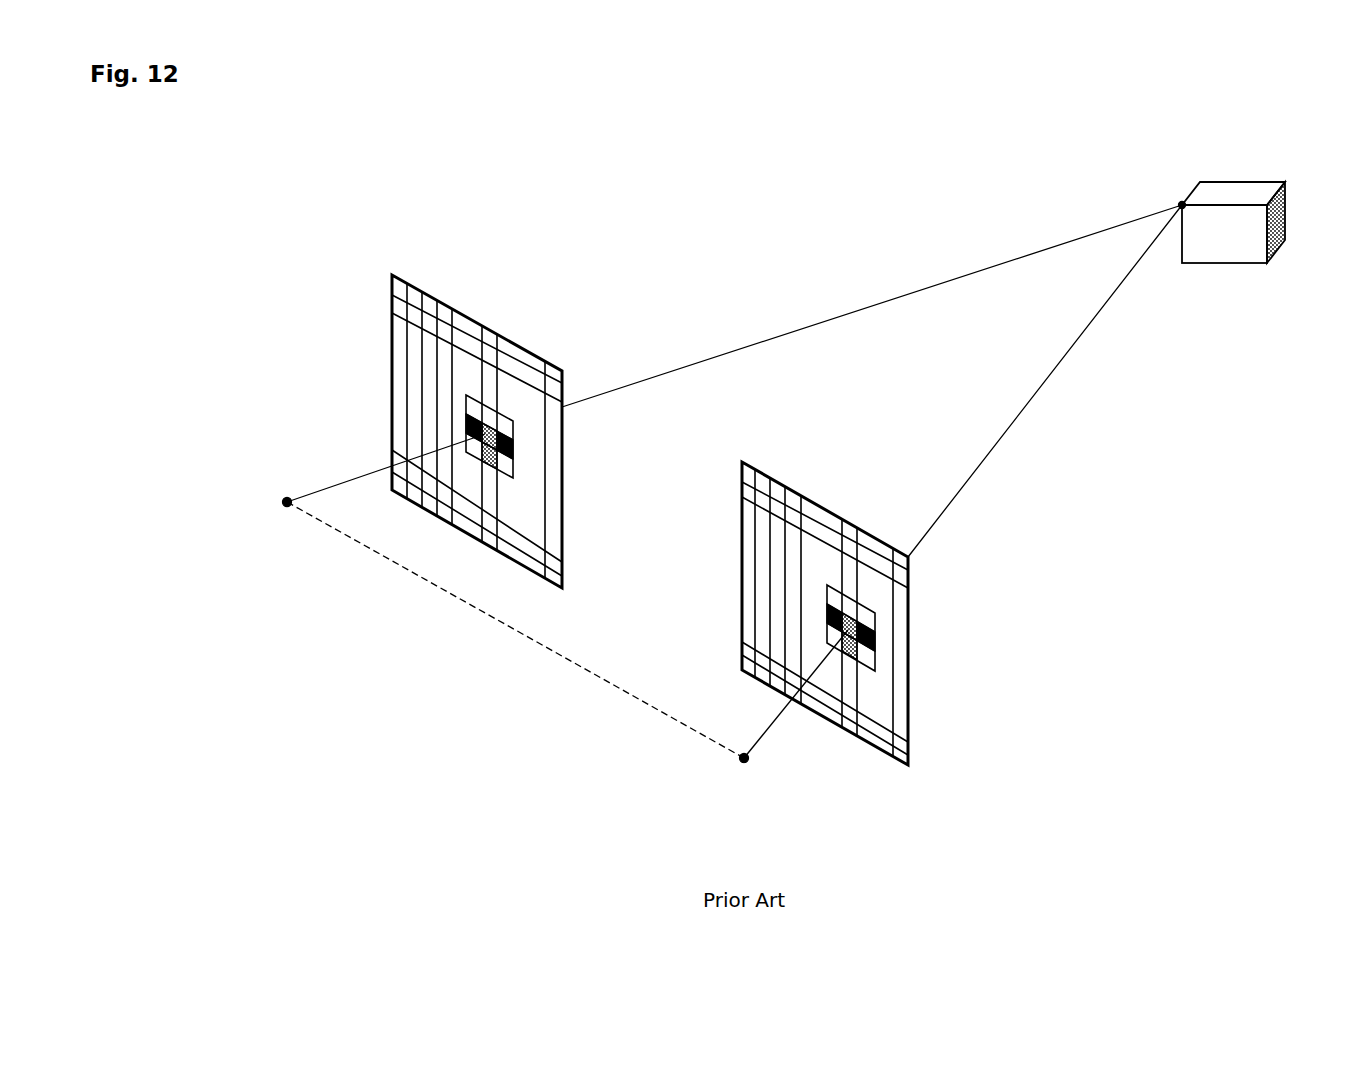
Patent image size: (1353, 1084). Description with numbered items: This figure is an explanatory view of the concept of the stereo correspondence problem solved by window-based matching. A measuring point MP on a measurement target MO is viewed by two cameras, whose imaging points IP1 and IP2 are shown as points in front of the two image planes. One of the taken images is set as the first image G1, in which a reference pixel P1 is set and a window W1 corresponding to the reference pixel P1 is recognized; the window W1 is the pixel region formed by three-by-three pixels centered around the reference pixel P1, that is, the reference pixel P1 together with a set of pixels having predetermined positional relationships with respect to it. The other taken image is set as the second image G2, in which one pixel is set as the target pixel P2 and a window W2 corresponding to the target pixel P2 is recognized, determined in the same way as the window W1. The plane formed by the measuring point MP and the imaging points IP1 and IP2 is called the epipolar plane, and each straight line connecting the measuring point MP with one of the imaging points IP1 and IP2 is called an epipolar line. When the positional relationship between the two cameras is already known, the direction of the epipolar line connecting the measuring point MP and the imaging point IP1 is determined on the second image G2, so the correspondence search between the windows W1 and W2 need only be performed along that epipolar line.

The measuring point MP is at (1182, 203).
The measurement target MO is at (1230, 258).
The imaging point of the camera 1 IP1 is at (287, 507).
The imaging point of the camera 2 IP2 is at (744, 764).
The first image G1 is at (539, 407).
The second image G2 is at (920, 596).
The window W1 is at (550, 393).
The window W2 is at (934, 574).
The reference pixel P1 is at (500, 450).
The target pixel P2 is at (872, 635).